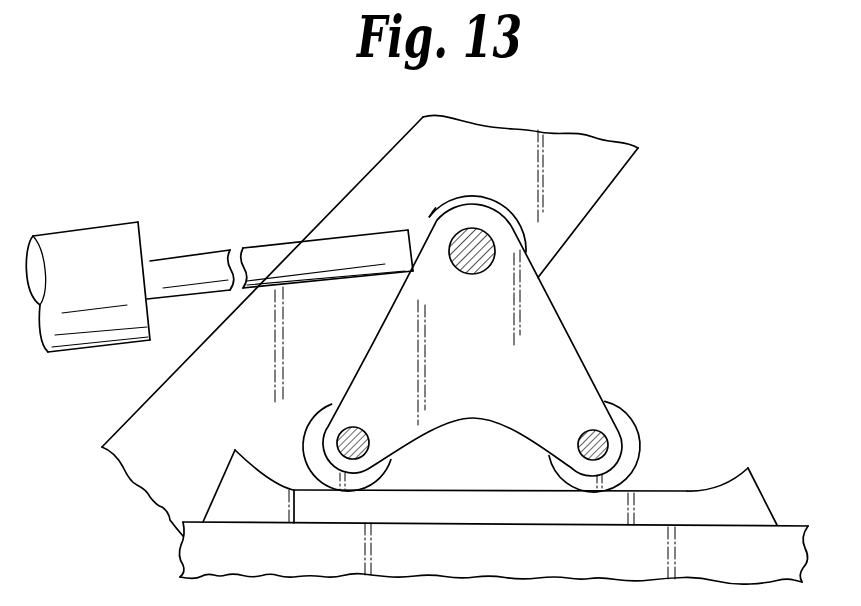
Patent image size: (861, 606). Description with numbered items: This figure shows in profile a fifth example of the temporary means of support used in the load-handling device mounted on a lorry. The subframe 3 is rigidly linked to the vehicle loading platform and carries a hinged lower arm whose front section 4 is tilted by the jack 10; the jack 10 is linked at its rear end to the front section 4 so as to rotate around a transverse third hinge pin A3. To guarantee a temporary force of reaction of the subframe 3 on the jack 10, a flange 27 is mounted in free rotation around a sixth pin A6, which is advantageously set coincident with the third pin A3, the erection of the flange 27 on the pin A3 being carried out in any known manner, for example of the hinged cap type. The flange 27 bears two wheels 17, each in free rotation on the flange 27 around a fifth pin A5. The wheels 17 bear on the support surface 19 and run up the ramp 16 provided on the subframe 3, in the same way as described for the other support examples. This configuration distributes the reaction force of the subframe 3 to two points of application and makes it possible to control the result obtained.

The subframe 3 is at (200, 555).
The front section 4 is at (583, 172).
The jack 10 is at (513, 217).
The ramp 16 is at (741, 495).
The wheels 17 is at (311, 418).
The support surface 19 is at (686, 492).
The flange 27 is at (541, 320).
The third hinge pin A3 is at (487, 248).
The fifth pin A5 is at (343, 443).
The sixth pin A6 is at (429, 217).